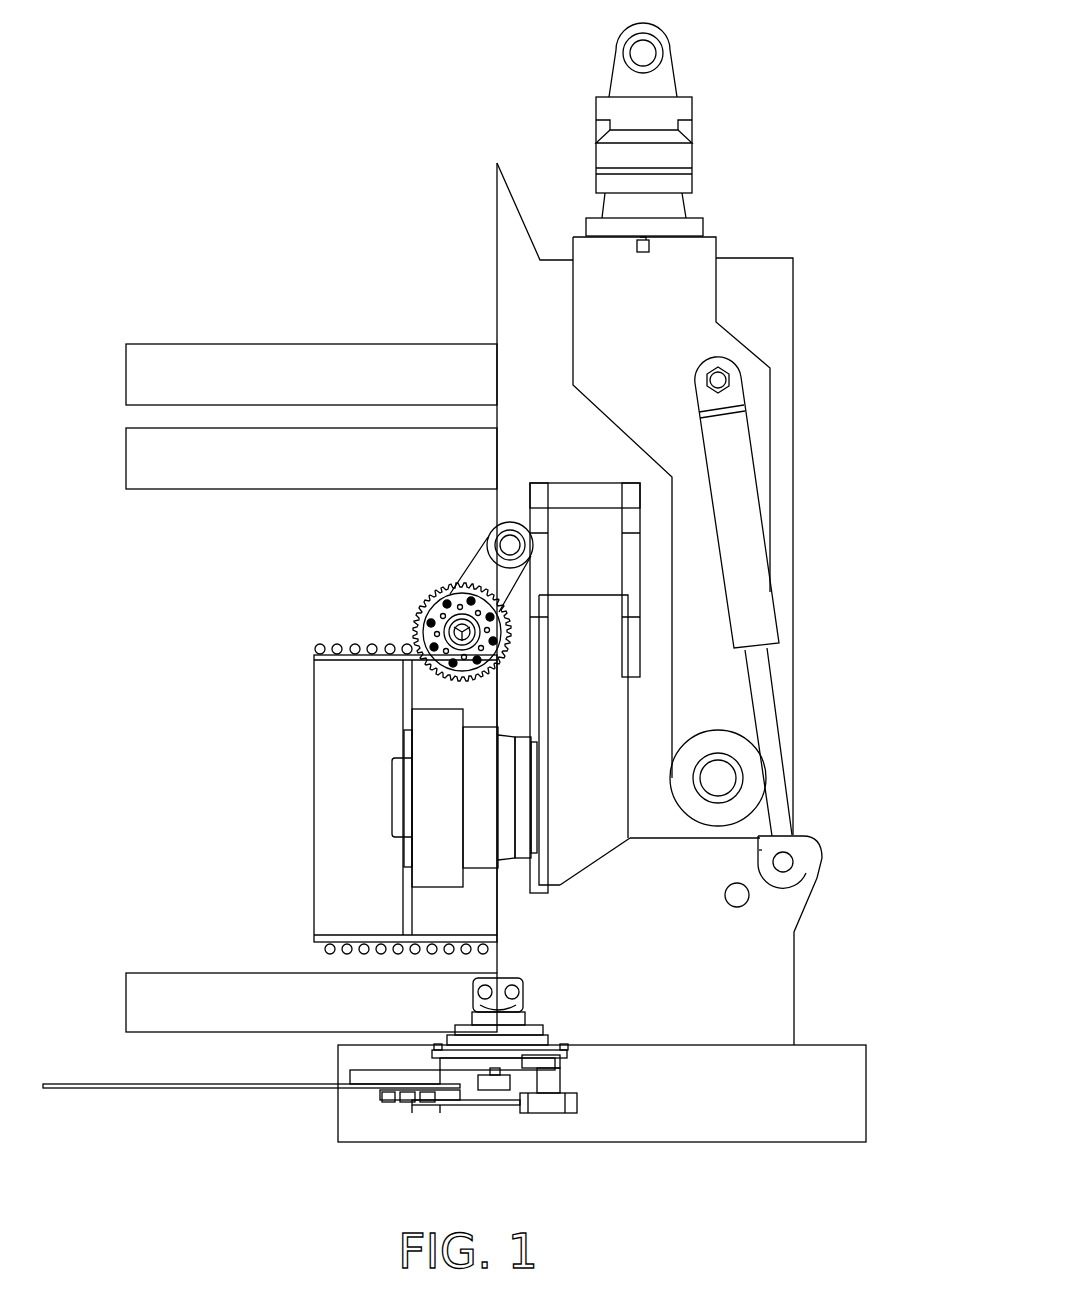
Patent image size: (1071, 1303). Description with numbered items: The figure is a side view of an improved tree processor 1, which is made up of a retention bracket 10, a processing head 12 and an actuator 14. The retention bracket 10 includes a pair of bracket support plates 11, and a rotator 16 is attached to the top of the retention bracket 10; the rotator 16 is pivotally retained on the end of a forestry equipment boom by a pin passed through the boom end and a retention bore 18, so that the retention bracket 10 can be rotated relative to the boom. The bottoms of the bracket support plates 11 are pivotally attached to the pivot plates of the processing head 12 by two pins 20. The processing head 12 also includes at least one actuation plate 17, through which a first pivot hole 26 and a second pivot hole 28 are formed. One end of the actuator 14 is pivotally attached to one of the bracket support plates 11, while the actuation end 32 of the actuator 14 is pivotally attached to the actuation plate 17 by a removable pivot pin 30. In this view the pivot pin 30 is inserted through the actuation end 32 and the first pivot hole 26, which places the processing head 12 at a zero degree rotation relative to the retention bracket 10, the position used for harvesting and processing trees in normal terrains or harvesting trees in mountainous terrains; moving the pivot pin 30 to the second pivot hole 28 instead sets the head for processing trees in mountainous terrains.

The improved tree processor 1 is at (793, 217).
The retention bracket 10 is at (740, 345).
The bracket support plates 11 is at (671, 339).
The processing head 12 is at (793, 695).
The actuator 14 is at (760, 617).
The rotator 16 is at (692, 122).
The actuation plate 17 is at (678, 958).
The retention bore 18 is at (663, 58).
The pins 20 is at (722, 778).
The first pivot hole 26 is at (790, 863).
The second pivot hole 28 is at (750, 898).
The pivot pin 30 is at (800, 857).
The actuation end 32 is at (758, 850).